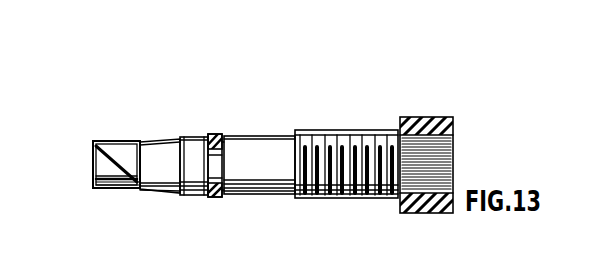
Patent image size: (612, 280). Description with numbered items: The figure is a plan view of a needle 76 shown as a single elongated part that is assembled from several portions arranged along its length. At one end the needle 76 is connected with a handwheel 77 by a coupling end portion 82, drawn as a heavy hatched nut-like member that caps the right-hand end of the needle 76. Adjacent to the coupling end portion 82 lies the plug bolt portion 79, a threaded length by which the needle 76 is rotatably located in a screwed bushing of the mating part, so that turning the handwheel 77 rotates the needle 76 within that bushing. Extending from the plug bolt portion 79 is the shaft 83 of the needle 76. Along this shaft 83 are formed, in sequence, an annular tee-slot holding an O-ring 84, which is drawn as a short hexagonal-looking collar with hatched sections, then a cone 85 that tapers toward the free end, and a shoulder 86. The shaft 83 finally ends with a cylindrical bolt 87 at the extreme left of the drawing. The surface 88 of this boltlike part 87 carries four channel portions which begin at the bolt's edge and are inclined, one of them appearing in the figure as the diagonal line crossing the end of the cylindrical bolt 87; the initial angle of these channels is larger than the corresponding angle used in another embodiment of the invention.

The needle 76 is at (370, 116).
The handwheel 77 is at (440, 125).
The plug bolt portion 79 is at (328, 142).
The coupling end portion 82 is at (456, 152).
The shaft 83 is at (260, 150).
The O-ring 84 is at (214, 133).
The cone 85 is at (162, 180).
The shoulder 86 is at (135, 186).
The cylindrical bolt 87 is at (120, 150).
The surface 88 is at (93, 180).